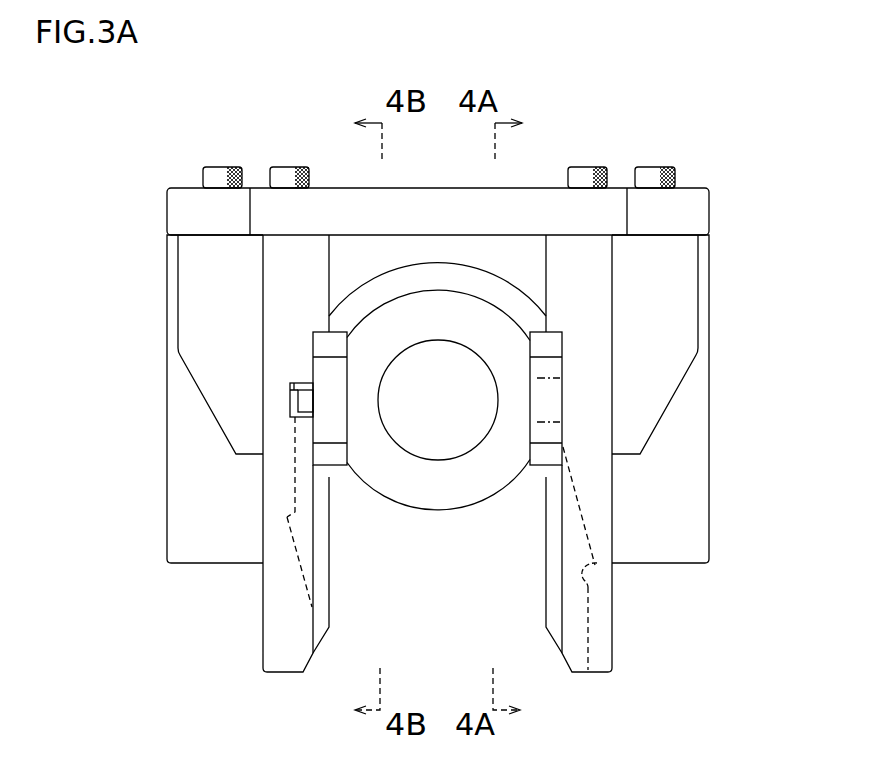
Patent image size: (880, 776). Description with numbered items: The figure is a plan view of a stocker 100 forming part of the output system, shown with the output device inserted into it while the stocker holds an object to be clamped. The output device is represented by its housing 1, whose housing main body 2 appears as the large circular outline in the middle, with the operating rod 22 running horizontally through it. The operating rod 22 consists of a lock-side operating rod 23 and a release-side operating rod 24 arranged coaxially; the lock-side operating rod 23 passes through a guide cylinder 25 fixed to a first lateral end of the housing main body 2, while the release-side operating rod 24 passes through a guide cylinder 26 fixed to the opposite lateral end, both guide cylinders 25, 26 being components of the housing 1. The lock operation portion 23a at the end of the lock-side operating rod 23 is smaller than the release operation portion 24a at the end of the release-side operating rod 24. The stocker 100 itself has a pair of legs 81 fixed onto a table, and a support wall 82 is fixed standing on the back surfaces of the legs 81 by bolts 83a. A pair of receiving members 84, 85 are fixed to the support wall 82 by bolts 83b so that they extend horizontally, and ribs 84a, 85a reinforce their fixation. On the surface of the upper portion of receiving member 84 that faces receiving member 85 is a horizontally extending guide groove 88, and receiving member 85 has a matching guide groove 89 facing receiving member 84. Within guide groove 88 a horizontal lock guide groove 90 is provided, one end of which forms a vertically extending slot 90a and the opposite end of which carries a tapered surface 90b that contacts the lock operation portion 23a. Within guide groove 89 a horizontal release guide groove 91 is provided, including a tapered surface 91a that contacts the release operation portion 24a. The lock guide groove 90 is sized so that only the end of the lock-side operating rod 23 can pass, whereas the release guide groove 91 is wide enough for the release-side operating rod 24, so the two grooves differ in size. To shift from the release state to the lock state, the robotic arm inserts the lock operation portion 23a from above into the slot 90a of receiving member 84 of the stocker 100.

The housing 1 is at (465, 507).
The housing main body 2 is at (437, 422).
The operating rod 22 is at (416, 404).
The lock-side operating rod 23 is at (177, 432).
The lock operation portion 23a is at (293, 404).
The release-side operating rod 24 is at (663, 354).
The release operation portion 24a is at (563, 400).
The guide cylinder 25 is at (327, 342).
The guide cylinder 26 is at (550, 343).
The leg 81 is at (438, 399).
The support wall 82 is at (695, 188).
The bolt 83a is at (212, 167).
The bolt 83b is at (288, 167).
The receiving member 84 is at (301, 453).
The rib 84a is at (178, 293).
The receiving member 85 is at (592, 460).
The rib 85a is at (709, 293).
The guide groove 88 is at (320, 602).
The guide groove 89 is at (552, 602).
The lock guide groove 90 is at (358, 512).
The slot 90a is at (290, 383).
The tapered surface 90b is at (308, 565).
The release guide groove 91 is at (640, 566).
The tapered surface 91a is at (592, 588).
The stocker 100 is at (735, 207).